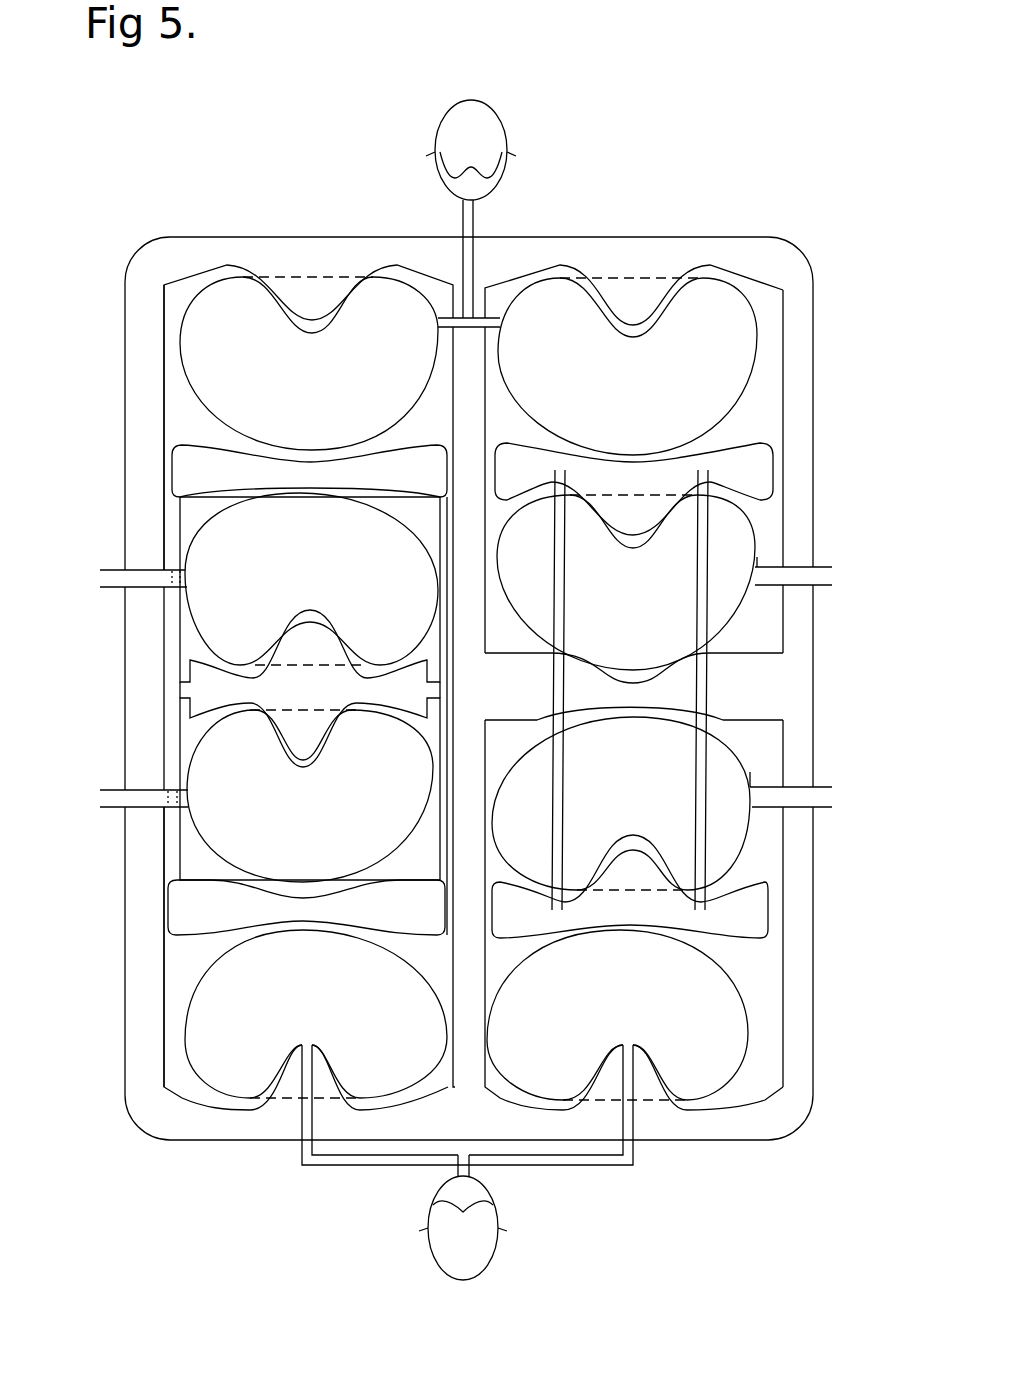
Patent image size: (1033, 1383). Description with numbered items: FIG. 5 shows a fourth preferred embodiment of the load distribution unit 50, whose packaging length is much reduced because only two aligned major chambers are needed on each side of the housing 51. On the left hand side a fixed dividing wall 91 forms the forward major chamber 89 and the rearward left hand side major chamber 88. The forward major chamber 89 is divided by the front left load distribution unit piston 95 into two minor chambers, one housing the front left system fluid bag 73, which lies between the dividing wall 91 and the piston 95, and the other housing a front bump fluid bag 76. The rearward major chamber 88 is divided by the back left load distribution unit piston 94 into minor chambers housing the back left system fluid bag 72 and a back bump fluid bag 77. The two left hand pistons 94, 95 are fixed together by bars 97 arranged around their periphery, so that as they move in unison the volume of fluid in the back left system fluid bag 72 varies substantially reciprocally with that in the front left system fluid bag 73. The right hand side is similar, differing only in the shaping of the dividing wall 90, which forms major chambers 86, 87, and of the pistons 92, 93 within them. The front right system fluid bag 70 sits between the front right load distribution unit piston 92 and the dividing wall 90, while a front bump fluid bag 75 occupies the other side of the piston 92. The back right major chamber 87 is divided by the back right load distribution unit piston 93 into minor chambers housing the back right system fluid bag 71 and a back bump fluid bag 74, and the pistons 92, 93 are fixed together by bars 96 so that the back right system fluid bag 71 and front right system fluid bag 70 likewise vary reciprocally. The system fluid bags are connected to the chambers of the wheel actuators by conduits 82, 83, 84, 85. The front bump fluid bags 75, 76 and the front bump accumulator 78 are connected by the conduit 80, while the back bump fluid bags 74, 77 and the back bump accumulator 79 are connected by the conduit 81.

The load distribution unit 50 is at (662, 205).
The housing 51 is at (792, 253).
The front right system fluid bag 70 is at (755, 612).
The back right system fluid bag 71 is at (743, 770).
The back left system fluid bag 72 is at (207, 768).
The front left system fluid bag 73 is at (217, 613).
The back bump fluid bag 74 is at (733, 1027).
The front bump fluid bag 75 is at (757, 358).
The front bump fluid bag 76 is at (213, 352).
The back bump fluid bag 77 is at (215, 1040).
The front bump accumulator 78 is at (487, 102).
The back bump accumulator 79 is at (487, 1268).
The conduit 80 is at (479, 218).
The conduit 81 is at (530, 1165).
The conduit 82 is at (835, 580).
The conduit 83 is at (835, 797).
The conduit 84 is at (133, 800).
The conduit 85 is at (137, 582).
The major chamber 86 is at (770, 417).
The back right major chamber 87 is at (757, 860).
The rearward left hand side major chamber 88 is at (183, 960).
The forward major chamber 89 is at (183, 430).
The dividing wall 90 is at (763, 680).
The fixed dividing wall 91 is at (198, 692).
The front right load distribution unit piston 92 is at (753, 472).
The back right load distribution unit piston 93 is at (758, 907).
The back left load distribution unit piston 94 is at (183, 913).
The front left load distribution unit piston 95 is at (200, 472).
The bars 96 is at (557, 558).
The bars 97 is at (433, 512).